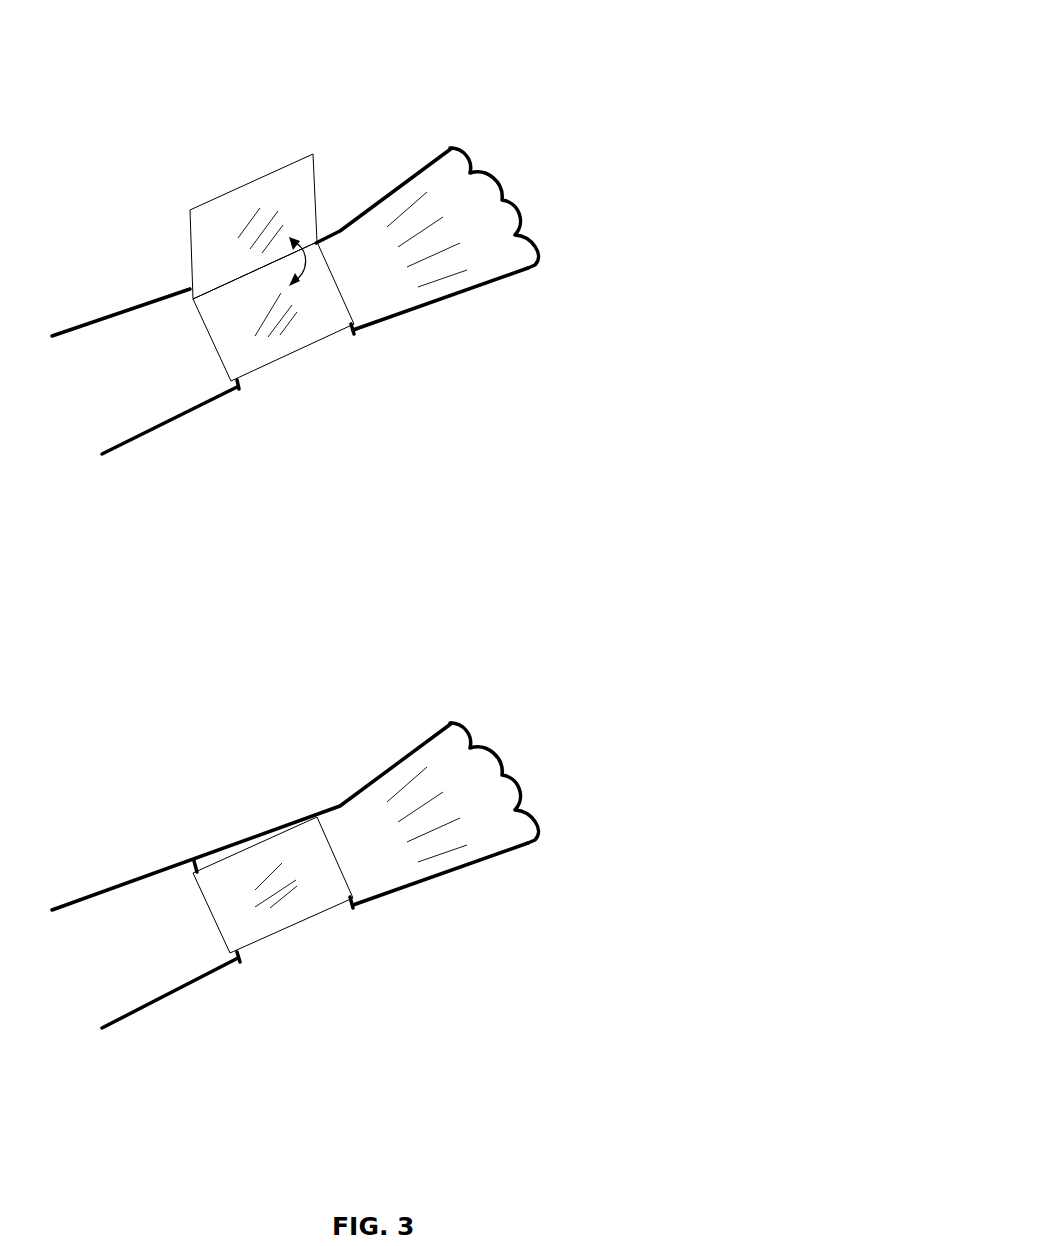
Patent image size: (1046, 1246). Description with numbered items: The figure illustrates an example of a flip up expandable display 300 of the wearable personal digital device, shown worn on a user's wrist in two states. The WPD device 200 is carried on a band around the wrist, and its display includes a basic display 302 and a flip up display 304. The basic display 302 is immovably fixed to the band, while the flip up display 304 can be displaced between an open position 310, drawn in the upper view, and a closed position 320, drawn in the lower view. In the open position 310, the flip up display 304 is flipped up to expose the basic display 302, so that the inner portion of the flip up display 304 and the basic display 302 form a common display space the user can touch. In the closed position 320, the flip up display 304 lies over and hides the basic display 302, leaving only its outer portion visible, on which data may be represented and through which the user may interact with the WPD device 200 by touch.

The flip up expandable display 300 is at (760, 58).
The open position 310 is at (619, 292).
The closed position 320 is at (619, 865).
The WPD device 200 is at (212, 337).
The basic display 302 is at (292, 328).
The flip up display 304 is at (250, 198).